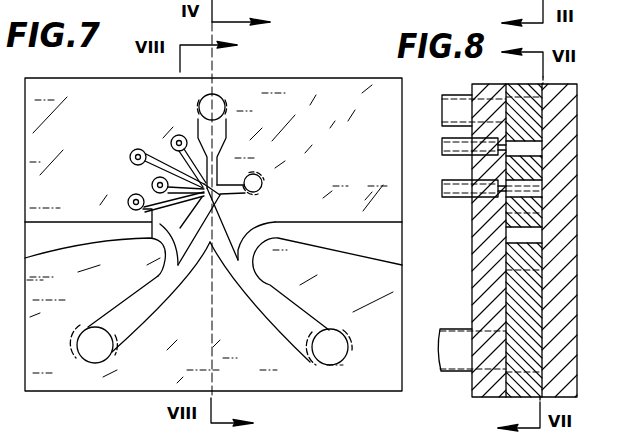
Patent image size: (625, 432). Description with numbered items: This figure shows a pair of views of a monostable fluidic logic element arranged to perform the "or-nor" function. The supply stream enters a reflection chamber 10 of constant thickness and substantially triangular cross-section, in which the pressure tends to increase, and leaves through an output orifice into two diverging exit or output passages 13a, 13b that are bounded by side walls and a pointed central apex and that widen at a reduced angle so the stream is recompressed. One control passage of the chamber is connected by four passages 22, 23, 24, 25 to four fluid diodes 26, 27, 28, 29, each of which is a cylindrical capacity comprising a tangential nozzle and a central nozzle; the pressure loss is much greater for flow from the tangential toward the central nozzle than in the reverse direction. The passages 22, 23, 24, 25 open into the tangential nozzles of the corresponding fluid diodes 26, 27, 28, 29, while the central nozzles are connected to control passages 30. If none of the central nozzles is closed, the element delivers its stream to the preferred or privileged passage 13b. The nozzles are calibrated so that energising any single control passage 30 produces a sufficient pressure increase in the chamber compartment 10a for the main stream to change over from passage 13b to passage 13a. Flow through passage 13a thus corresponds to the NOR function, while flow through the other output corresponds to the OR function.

In FIG. 7, the reflection chamber 10 is at (221, 194).
In FIG. 7, the chamber compartment 10a is at (162, 207).
In FIG. 7, the exit or output passage 13a is at (149, 312).
In FIG. 7, the exit or output passage 13b is at (305, 323).
In FIG. 7, the passage 22 is at (196, 123).
In FIG. 7, the passage 23 is at (164, 158).
In FIG. 7, the passage 24 is at (152, 183).
In FIG. 7, the passage 25 is at (150, 240).
In FIG. 7, the fluid diode 26 is at (179, 135).
In FIG. 7, the fluid diode 27 is at (130, 154).
In FIG. 7, the fluid diode 28 is at (151, 184).
In FIG. 7, the fluid diode 29 is at (130, 210).
In FIG. 8, the control passages 30 is at (452, 160).